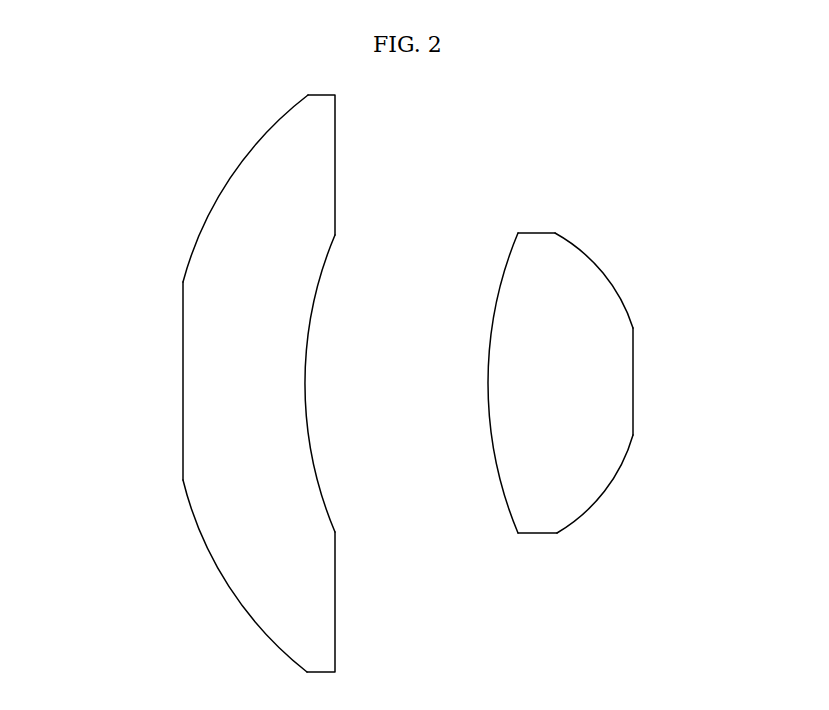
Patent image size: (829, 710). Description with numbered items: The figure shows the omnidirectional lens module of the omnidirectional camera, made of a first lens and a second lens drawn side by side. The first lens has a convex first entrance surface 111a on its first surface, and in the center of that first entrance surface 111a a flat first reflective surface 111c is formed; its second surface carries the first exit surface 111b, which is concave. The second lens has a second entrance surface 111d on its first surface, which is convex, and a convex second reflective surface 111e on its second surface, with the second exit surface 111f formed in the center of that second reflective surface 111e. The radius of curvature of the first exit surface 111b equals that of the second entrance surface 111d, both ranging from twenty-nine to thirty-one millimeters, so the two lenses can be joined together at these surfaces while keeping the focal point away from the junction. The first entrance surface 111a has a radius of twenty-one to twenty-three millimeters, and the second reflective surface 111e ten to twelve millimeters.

The first entrance surface 111a is at (232, 178).
The first exit surface 111b is at (318, 476).
The first reflective surface 111c is at (183, 382).
The second entrance surface 111d is at (488, 382).
The second reflective surface 111e is at (605, 273).
The second exit surface 111f is at (635, 380).